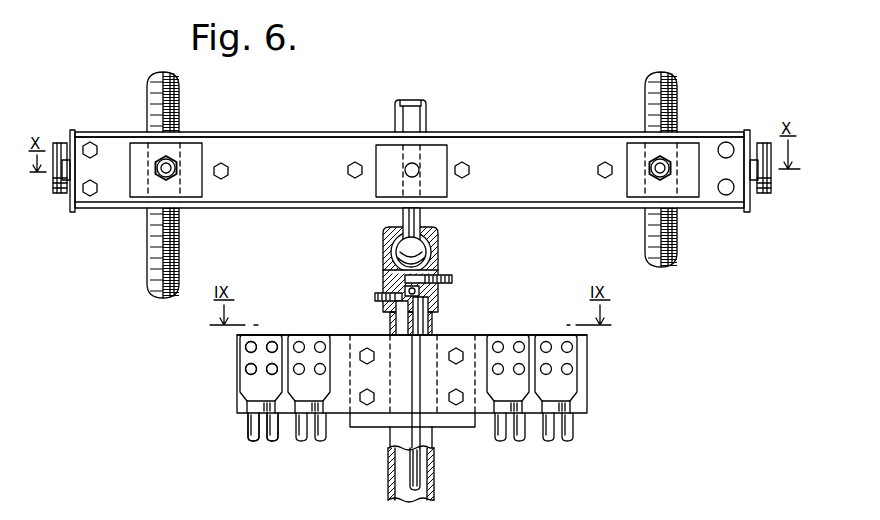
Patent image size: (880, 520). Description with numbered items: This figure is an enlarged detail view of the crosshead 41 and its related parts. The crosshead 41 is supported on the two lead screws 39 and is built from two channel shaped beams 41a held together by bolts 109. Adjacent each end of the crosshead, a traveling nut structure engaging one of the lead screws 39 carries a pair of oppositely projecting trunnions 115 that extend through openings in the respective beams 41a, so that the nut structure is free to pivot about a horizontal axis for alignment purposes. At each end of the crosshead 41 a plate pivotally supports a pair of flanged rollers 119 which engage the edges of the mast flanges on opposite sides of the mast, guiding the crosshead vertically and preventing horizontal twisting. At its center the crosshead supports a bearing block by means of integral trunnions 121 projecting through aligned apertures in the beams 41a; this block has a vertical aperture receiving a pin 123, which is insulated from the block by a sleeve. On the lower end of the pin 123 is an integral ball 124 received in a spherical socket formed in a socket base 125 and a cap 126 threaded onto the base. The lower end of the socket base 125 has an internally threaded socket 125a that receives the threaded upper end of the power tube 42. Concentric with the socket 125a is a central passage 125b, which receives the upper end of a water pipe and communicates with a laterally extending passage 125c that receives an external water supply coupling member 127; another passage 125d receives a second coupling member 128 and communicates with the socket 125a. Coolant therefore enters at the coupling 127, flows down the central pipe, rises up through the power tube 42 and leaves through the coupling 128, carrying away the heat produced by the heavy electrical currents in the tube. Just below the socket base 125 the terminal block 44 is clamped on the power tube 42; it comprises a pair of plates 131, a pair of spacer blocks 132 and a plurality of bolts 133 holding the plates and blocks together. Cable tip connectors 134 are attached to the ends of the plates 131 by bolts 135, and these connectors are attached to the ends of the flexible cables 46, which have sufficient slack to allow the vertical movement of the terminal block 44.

The lead screw 39 is at (160, 102).
The crosshead 41 is at (533, 129).
The channel shaped beam 41a is at (304, 149).
The trunnion 115 is at (167, 167).
The trunnion 121 is at (412, 170).
The bolt 109 is at (347, 172).
The flanged roller 119 is at (60, 195).
The pin 123 is at (403, 220).
The ball 124 is at (438, 250).
The cap 126 is at (392, 244).
The socket base 125 is at (384, 274).
The internally threaded socket 125a is at (435, 314).
The central passage 125b is at (440, 297).
The laterally extending passage 125c is at (440, 262).
The passage 125d is at (388, 306).
The water supply coupling member 127 is at (452, 279).
The coupling member 128 is at (376, 295).
The plate 131 is at (238, 404).
The spacer block 132 is at (376, 427).
The bolt 133 is at (365, 402).
The cable tip connector 134 is at (247, 380).
The bolt 135 is at (246, 368).
The cable 46 is at (272, 434).
The terminal block 44 is at (607, 371).
The power tube 42 is at (434, 470).